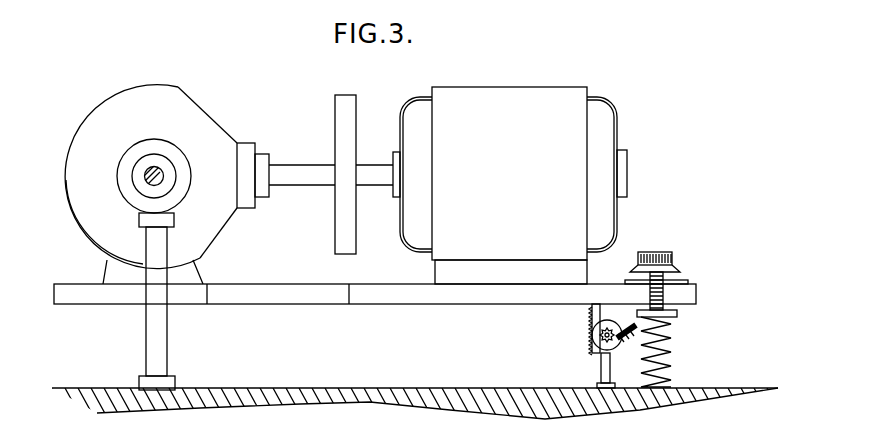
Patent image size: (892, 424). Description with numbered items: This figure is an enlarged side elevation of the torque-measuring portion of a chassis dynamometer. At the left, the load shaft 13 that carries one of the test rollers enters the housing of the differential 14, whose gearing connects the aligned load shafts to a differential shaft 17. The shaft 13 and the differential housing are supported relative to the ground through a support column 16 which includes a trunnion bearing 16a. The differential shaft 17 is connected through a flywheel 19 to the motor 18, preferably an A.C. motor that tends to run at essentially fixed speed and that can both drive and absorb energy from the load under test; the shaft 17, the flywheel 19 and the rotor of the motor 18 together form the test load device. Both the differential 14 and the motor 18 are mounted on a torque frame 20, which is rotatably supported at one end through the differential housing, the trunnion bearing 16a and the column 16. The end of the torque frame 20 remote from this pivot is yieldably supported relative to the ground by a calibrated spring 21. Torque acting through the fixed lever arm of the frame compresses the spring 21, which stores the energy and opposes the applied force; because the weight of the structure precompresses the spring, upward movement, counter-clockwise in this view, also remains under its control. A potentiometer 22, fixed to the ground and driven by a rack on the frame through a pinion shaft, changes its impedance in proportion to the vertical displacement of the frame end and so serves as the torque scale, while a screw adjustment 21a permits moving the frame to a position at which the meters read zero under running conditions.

The shaft 13 is at (143, 176).
The differential 14 is at (158, 95).
The support column 16 is at (153, 330).
The trunnion bearing 16a is at (157, 142).
The differential shaft 17 is at (295, 163).
The motor 18 is at (518, 183).
The flywheel 19 is at (345, 98).
The torque frame 20 is at (433, 295).
The calibrated spring 21 is at (673, 370).
The screw adjustment 21a is at (672, 262).
The potentiometer 22 is at (590, 333).